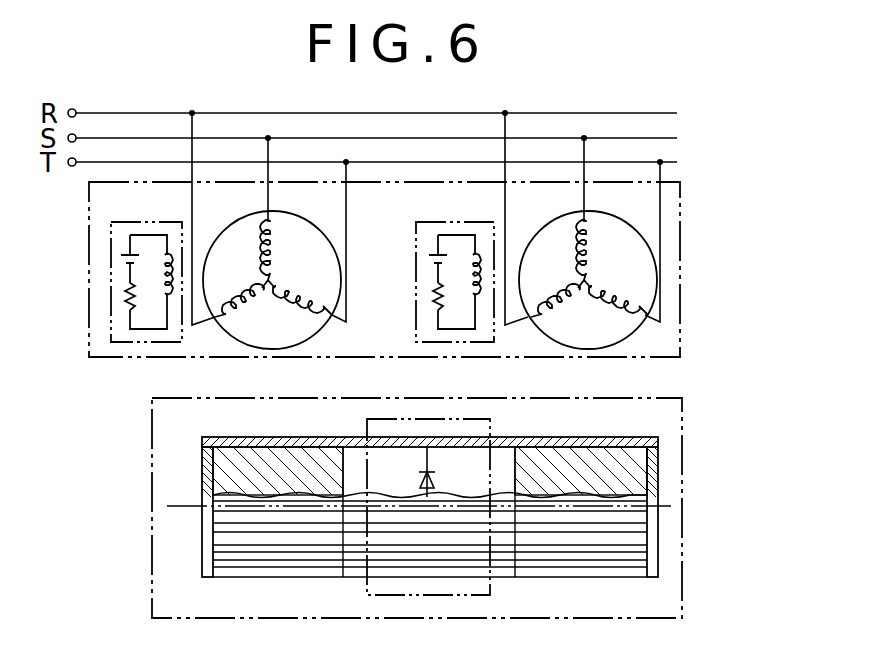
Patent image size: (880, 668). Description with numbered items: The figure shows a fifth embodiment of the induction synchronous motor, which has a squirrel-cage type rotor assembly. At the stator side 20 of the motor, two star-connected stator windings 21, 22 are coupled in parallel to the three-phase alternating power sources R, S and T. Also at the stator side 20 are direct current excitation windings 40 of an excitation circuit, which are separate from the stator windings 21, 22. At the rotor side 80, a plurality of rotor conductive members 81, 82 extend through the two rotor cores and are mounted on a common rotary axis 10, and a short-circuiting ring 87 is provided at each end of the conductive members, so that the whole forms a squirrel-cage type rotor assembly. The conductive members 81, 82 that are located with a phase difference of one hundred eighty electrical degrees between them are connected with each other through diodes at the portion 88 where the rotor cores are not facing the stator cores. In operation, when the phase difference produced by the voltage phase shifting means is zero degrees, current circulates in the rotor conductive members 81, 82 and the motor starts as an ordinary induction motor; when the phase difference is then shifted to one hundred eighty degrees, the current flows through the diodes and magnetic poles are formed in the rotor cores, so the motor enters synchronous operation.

The rotary axis 10 is at (188, 508).
The stator side 20 is at (682, 233).
The stator winding 21 is at (337, 235).
The stator winding 22 is at (518, 242).
The direct current excitation winding 40 is at (158, 250).
The rotor side 80 is at (683, 425).
The rotor conductive member 81 is at (234, 426).
The rotor conductive member 82 is at (614, 421).
The short-circuiting ring 87 is at (205, 477).
The portion where the rotor cores are not facing the stator cores 88 is at (398, 419).